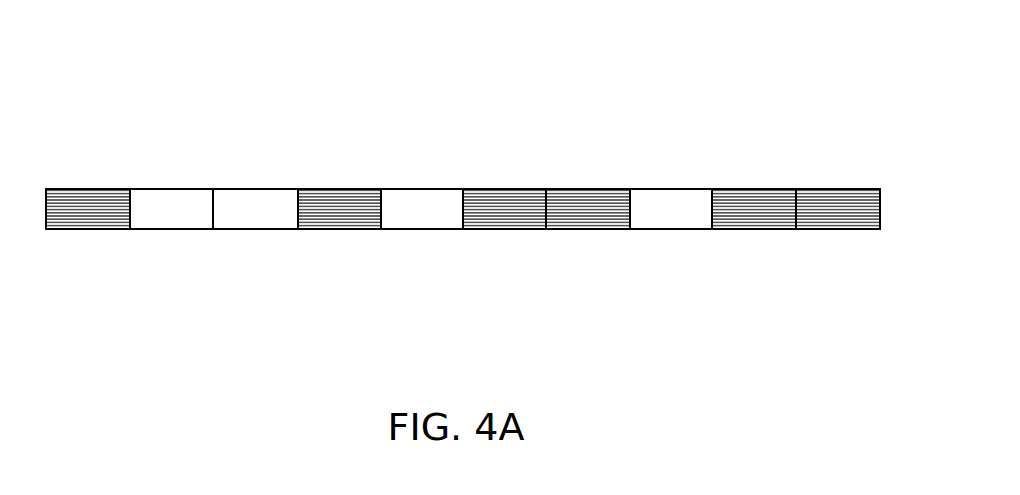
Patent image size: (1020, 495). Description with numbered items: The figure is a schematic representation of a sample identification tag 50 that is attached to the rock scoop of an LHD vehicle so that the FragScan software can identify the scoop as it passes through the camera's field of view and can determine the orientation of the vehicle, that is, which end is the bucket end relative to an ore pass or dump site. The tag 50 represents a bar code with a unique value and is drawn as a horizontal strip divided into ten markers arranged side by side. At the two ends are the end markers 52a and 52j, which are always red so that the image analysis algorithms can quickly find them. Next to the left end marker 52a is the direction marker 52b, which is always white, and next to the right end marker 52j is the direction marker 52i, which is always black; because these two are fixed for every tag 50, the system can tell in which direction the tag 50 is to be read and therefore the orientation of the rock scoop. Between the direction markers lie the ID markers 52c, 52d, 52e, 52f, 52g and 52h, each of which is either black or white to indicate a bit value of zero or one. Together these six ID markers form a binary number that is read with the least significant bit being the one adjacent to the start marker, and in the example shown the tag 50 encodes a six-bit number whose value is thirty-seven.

The identification tag 50 is at (463, 30).
The end marker 52a is at (105, 188).
The direction marker 52b is at (177, 229).
The ID marker 52c is at (230, 188).
The ID marker 52d is at (352, 229).
The ID marker 52e is at (409, 188).
The ID marker 52f is at (478, 229).
The ID marker 52g is at (582, 188).
The ID marker 52h is at (647, 229).
The direction marker 52i is at (755, 188).
The end marker 52j is at (828, 229).